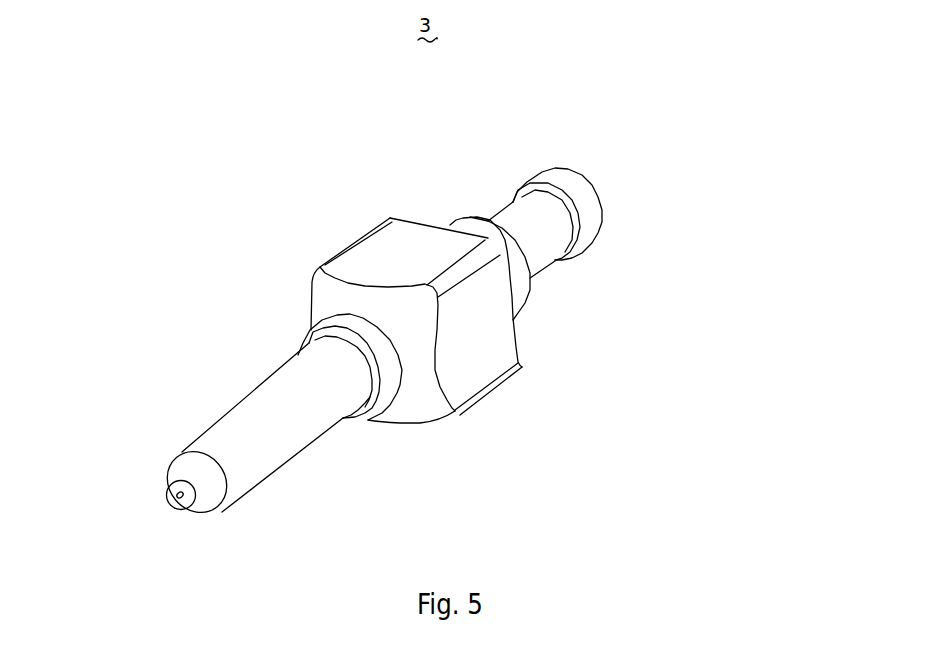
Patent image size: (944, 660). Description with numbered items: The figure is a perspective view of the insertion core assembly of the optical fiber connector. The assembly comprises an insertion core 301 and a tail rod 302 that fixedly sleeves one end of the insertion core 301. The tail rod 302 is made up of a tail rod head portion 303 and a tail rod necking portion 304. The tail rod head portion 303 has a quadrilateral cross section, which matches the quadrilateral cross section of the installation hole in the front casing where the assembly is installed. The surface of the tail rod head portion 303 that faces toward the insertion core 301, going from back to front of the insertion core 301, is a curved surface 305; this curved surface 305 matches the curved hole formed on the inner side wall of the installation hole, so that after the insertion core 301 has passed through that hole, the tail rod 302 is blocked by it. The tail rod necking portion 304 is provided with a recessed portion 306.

The insertion core 301 is at (276, 459).
The tail rod 302 is at (392, 218).
The tail rod head portion 303 is at (473, 340).
The tail rod necking portion 304 is at (593, 226).
The curved surface 305 is at (348, 297).
The recessed portion 306 is at (545, 258).